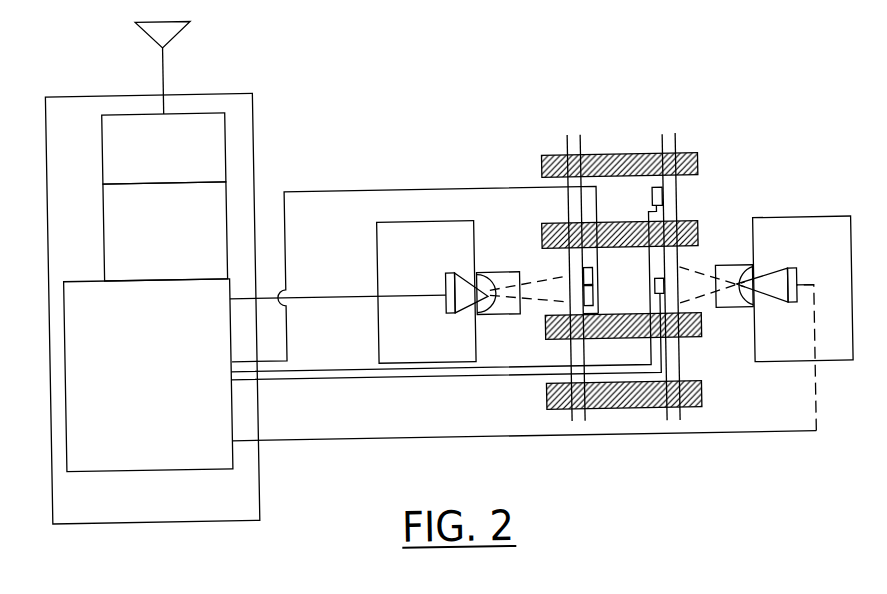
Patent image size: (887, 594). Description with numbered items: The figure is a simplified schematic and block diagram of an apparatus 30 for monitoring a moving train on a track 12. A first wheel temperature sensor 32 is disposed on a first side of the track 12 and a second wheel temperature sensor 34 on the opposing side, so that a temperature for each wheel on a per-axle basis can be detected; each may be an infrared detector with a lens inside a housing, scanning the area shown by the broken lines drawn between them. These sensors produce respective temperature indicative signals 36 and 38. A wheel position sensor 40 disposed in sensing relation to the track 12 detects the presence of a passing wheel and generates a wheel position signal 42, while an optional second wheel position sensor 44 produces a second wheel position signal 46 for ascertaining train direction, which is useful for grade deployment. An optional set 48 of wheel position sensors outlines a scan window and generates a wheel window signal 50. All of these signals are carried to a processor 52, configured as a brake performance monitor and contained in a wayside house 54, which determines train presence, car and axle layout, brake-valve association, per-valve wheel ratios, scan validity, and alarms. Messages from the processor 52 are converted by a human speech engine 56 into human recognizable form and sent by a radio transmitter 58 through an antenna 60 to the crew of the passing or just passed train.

The track 12 is at (680, 141).
The apparatus 30 is at (505, 70).
The first wheel temperature sensor 32 is at (480, 238).
The second wheel temperature sensor 34 is at (810, 219).
The temperature indicative signal 36 is at (322, 293).
The temperature indicative signal 38 is at (372, 438).
The wheel position sensor 40 is at (664, 290).
The wheel position signal 42 is at (360, 377).
The second wheel position sensor 44 is at (664, 201).
The second wheel position signal 46 is at (321, 367).
The set of wheel position sensors 48 is at (596, 282).
The wheel window signal 50 is at (405, 189).
The processor 52 is at (80, 275).
The wayside house 54 is at (49, 173).
The human speech engine 56 is at (228, 178).
The radio transmitter 58 is at (228, 133).
The antenna 60 is at (183, 27).